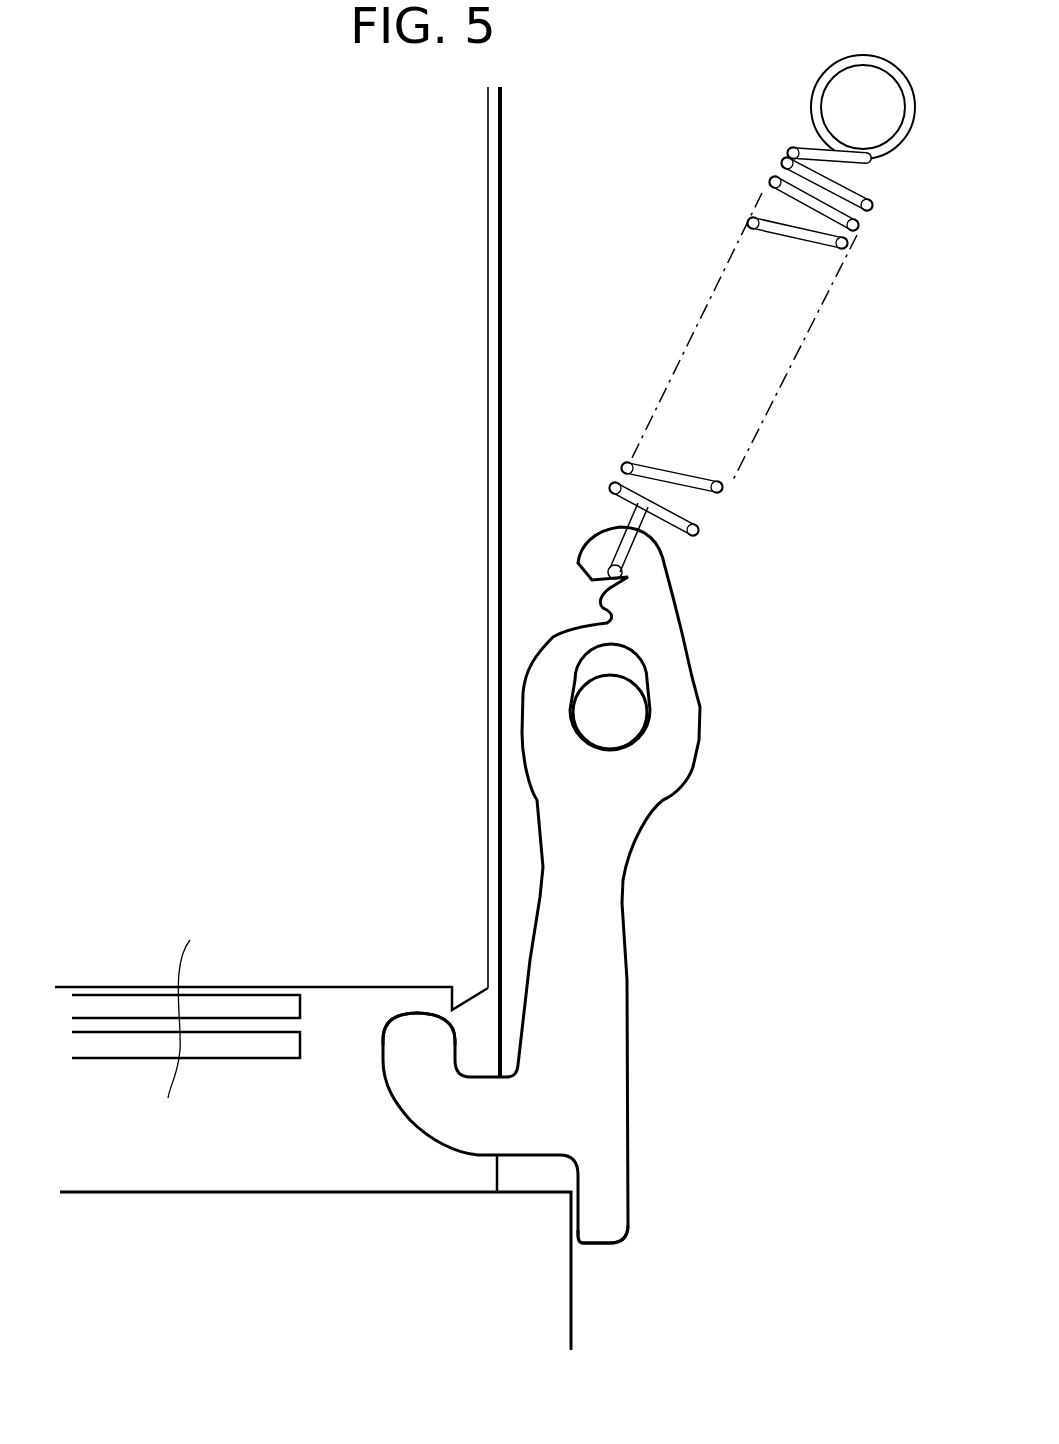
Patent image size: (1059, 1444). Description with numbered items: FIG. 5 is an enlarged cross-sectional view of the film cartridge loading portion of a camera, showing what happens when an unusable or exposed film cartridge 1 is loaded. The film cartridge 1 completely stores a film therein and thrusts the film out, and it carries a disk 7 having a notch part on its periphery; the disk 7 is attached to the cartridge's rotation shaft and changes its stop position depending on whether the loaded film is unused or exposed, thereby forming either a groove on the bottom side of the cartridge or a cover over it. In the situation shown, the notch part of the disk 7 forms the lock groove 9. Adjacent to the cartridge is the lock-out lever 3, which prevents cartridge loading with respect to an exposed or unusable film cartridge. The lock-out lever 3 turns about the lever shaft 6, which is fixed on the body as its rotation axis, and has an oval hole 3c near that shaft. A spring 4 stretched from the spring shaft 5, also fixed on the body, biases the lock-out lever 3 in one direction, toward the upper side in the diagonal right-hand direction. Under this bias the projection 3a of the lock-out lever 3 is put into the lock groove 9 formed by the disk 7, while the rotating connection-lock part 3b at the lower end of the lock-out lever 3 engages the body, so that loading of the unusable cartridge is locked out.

The film cartridge 1 is at (140, 1042).
The disk 7 is at (263, 1005).
The lock groove 9 is at (337, 1000).
The lock-out lever 3 is at (589, 909).
The projection 3a is at (417, 1032).
The rotating connection-lock part 3b is at (608, 1205).
The oval hole 3c is at (647, 665).
The spring 4 is at (740, 387).
The spring shaft 5 is at (810, 104).
The lever shaft 6 is at (617, 707).